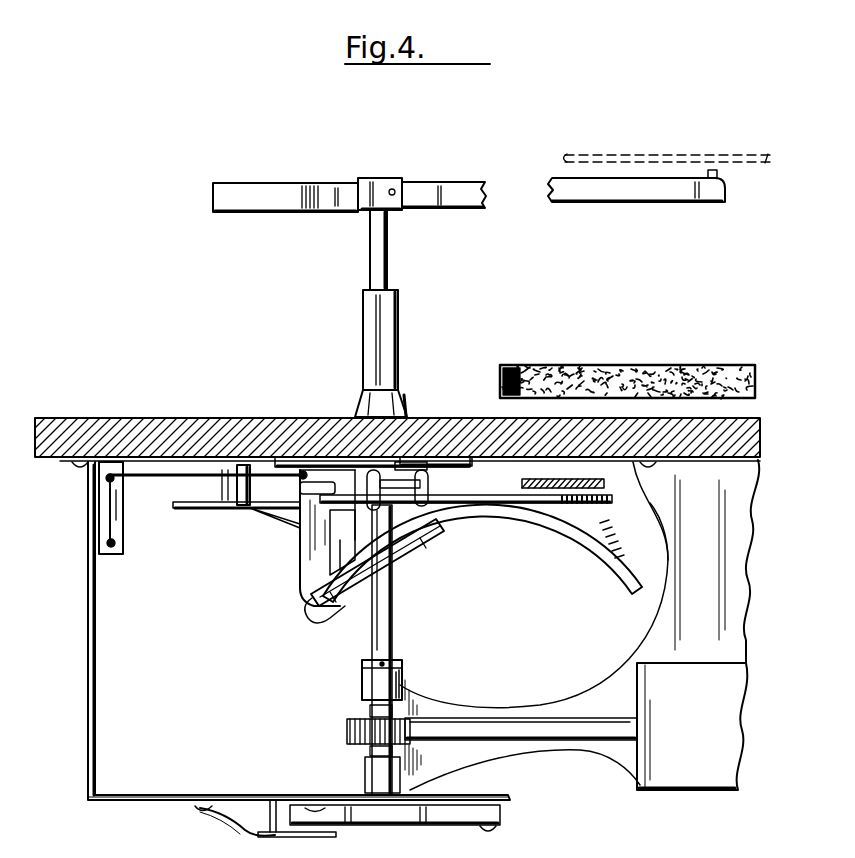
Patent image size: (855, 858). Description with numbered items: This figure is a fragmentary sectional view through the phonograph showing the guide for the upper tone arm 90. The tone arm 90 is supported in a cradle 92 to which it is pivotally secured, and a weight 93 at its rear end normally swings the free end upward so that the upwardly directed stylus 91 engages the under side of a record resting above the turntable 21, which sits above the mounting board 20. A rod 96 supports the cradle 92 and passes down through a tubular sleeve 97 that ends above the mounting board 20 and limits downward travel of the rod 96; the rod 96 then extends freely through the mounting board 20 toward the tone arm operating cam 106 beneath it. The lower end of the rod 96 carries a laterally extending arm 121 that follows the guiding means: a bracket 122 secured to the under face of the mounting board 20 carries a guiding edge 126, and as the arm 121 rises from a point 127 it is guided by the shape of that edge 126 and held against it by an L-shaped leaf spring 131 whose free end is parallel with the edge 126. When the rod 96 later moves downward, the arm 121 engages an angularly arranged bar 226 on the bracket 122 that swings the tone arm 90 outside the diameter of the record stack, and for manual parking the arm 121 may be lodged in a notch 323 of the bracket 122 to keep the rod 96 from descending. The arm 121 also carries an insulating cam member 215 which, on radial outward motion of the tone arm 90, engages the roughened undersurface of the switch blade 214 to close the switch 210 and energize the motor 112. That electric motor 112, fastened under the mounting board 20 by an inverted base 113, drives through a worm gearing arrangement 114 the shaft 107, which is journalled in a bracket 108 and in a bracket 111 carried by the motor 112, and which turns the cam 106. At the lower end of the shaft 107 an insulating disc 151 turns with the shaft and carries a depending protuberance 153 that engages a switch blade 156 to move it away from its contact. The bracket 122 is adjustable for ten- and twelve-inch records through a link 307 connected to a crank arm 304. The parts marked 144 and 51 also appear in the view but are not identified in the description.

The weight 93 is at (270, 190).
The cradle 92 is at (385, 181).
The upper tone arm 90 is at (455, 190).
The stylus 91 is at (718, 175).
The rod 96 is at (392, 262).
The tubular sleeve 97 is at (398, 338).
The turntable 21 is at (534, 367).
The mounting board 20 is at (200, 418).
The switch 210 is at (326, 420).
The laterally extending arm 121 is at (420, 421).
The bracket 144 is at (236, 471).
The link 307 is at (168, 478).
The notch 323 is at (300, 490).
The cam member 215 is at (428, 490).
The switch blade 214 is at (470, 466).
The bar 51 is at (586, 479).
The crank arm 304 is at (118, 544).
The tone arm operating cam 106 is at (246, 510).
The bracket 122 is at (306, 542).
The guiding edge 126 is at (320, 556).
The spring 131 is at (440, 538).
The angularly arranged bar 226 is at (411, 568).
The point 127 is at (311, 597).
The shaft 107 is at (375, 634).
The bracket 108 is at (96, 695).
The bracket 111 is at (449, 706).
The inverted base 113 is at (716, 558).
The worm gearing arrangement 114 is at (348, 733).
The electric motor 112 is at (676, 788).
The disc 151 is at (400, 826).
The protuberance 153 is at (492, 829).
The switch blade 156 is at (256, 836).